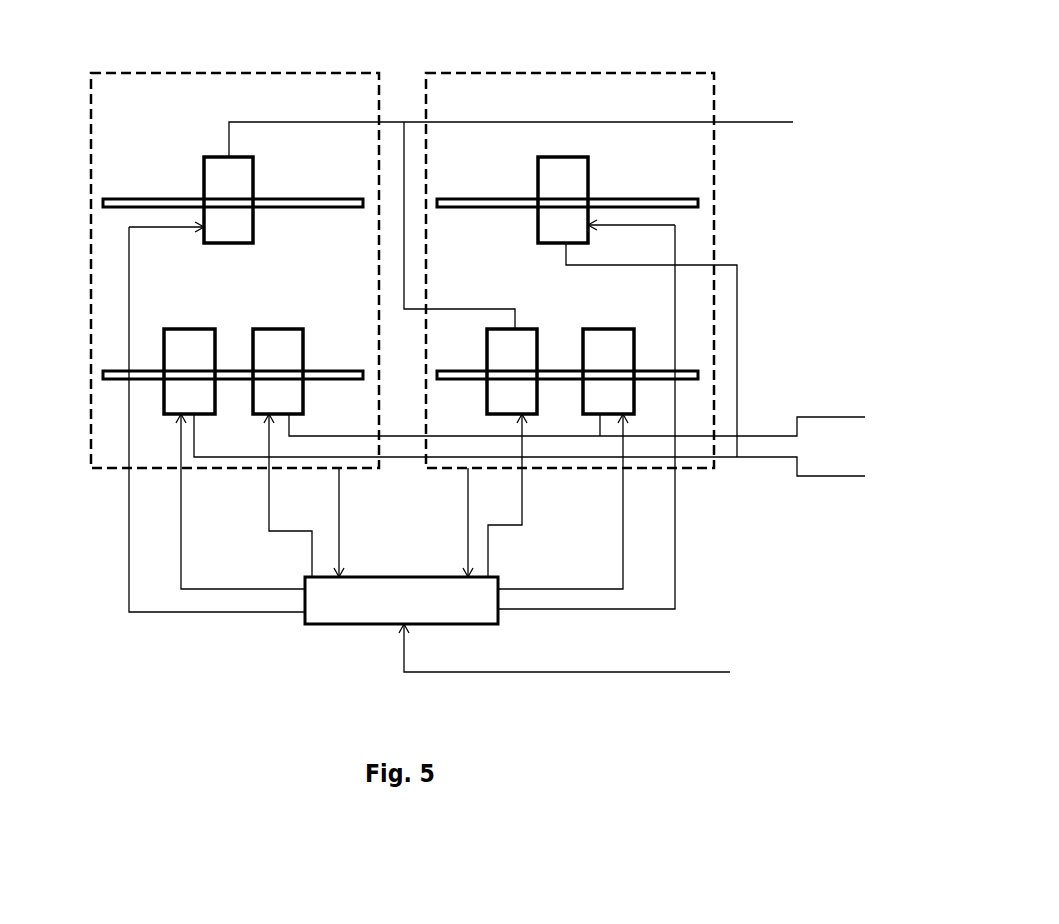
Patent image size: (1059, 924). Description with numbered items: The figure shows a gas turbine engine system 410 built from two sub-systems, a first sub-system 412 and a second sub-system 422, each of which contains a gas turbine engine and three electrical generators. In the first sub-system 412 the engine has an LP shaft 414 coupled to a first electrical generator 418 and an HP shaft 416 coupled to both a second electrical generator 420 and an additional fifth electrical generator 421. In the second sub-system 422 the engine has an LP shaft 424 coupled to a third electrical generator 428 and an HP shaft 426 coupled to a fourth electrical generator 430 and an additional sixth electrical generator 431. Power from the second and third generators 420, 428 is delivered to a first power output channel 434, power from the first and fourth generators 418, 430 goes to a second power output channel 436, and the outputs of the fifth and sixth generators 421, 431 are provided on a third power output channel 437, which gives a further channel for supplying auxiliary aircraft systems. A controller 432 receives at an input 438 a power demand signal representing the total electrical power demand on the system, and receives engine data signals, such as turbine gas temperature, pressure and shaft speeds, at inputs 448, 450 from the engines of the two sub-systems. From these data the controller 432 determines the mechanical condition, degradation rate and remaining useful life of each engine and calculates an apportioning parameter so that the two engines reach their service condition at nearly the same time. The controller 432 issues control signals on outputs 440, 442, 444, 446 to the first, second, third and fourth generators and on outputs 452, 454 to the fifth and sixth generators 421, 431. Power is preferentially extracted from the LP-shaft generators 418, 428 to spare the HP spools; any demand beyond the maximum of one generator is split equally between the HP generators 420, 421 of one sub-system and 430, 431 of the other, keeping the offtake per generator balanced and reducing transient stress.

The engine system 410 is at (461, 351).
The first sub-system 412 is at (289, 73).
The LP shaft 414 is at (165, 199).
The HP shaft 416 is at (107, 371).
The first electrical generator 418 is at (240, 224).
The second electrical generator 420 is at (178, 347).
The fifth electrical generator 421 is at (280, 350).
The second sub-system 422 is at (655, 73).
The LP shaft 424 is at (635, 199).
The HP shaft 426 is at (698, 378).
The third electrical generator 428 is at (552, 232).
The fourth electrical generator 430 is at (530, 338).
The sixth electrical generator 431 is at (620, 350).
The controller 432 is at (335, 617).
The first power output channel 434 is at (760, 457).
The second power output channel 436 is at (770, 123).
The third power output channel 437 is at (820, 417).
The input 438 is at (584, 654).
The output 440 is at (265, 589).
The output 442 is at (265, 612).
The output 444 is at (520, 589).
The output 446 is at (525, 609).
The input 448 is at (339, 532).
The input 450 is at (468, 530).
The output 452 is at (269, 503).
The output 454 is at (522, 512).